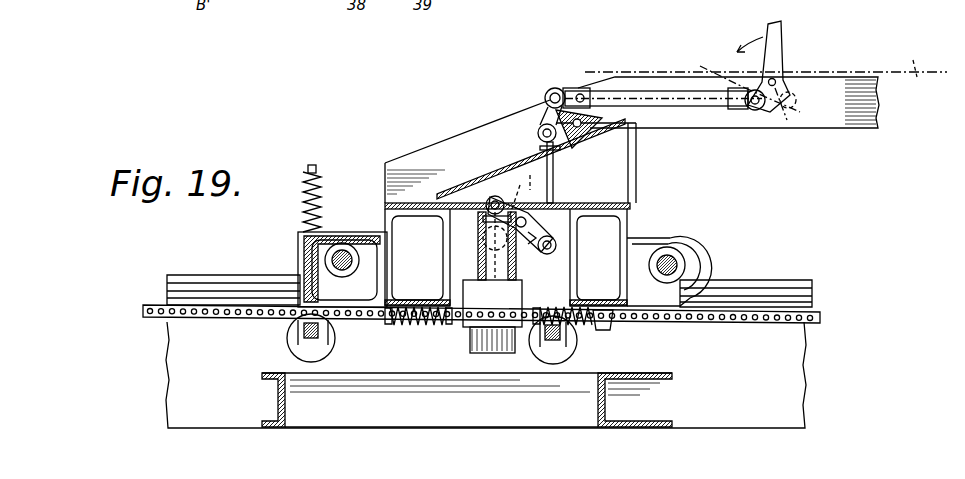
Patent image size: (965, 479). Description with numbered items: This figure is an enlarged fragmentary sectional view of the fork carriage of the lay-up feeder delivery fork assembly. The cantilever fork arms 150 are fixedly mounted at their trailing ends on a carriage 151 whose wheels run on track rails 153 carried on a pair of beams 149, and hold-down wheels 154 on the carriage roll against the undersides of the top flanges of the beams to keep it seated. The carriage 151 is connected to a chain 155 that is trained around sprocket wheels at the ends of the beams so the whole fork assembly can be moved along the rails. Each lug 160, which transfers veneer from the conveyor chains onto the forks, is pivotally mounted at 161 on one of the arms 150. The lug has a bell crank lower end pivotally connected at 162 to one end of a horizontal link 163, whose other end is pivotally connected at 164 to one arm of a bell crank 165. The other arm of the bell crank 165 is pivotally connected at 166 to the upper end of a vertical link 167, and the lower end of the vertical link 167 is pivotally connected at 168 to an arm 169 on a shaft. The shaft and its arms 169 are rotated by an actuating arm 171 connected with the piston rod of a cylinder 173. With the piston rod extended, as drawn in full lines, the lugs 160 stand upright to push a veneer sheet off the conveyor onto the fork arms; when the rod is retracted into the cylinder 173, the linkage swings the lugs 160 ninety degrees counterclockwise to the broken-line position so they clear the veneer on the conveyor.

The beams 149 is at (805, 390).
The delivery fork assembly arm 150 is at (878, 108).
The carriage 151 is at (637, 176).
The track rails 153 is at (225, 276).
The hold-down wheels 154 is at (286, 342).
The chain 155 is at (232, 318).
The lug 160 is at (783, 28).
The lug pivot 161 is at (768, 80).
The bell crank pivot connection 162 is at (780, 110).
The horizontal link 163 is at (730, 108).
The horizontal link pivot connection 164 is at (552, 88).
The bell crank 165 is at (572, 90).
The bell crank to vertical link pivot 166 is at (538, 128).
The vertical link 167 is at (553, 160).
The vertical link lower pivot 168 is at (556, 247).
The arm 169 is at (530, 246).
The actuating arm 171 is at (508, 186).
The cylinder 173 is at (460, 318).